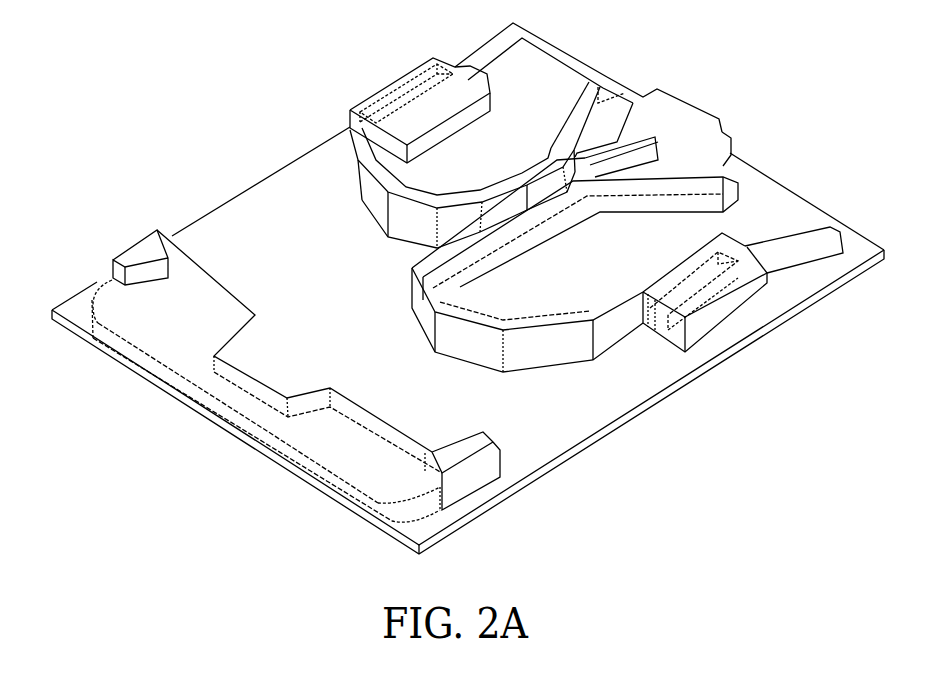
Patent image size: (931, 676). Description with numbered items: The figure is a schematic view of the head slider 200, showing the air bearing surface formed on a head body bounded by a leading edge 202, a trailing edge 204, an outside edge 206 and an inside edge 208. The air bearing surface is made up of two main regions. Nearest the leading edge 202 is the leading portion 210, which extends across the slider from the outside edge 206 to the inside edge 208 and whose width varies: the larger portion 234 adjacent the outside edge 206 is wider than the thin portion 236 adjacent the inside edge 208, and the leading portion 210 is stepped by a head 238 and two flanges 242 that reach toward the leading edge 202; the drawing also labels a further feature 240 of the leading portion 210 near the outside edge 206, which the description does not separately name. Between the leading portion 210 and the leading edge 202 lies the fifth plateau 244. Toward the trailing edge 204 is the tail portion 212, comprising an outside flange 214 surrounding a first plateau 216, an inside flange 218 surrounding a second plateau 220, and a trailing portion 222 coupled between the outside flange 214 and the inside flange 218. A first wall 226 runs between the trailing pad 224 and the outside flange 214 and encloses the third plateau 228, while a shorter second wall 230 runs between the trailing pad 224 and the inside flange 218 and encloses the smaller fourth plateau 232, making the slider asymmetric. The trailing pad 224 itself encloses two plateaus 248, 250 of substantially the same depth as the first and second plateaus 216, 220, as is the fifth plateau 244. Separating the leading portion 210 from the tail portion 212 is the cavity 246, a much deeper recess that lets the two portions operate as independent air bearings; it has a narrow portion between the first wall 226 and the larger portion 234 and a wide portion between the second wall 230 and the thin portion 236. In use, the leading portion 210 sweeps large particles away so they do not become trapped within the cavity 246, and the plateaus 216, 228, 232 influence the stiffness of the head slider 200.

The head slider 200 is at (205, 137).
The leading edge 202 is at (143, 363).
The trailing edge 204 is at (575, 64).
The outside edge 206 is at (610, 430).
The inside edge 208 is at (301, 157).
The leading portion 210 is at (293, 361).
The tail portion 212 is at (717, 115).
The outside flange 214 is at (747, 285).
The first plateau 216 is at (683, 313).
The inside flange 218 is at (407, 83).
The second plateau 220 is at (390, 127).
The trailing portion 222 is at (659, 132).
The trailing pad 224 is at (618, 118).
The first wall 226 is at (457, 340).
The third plateau 228 is at (603, 261).
The second wall 230 is at (412, 193).
The fourth plateau 232 is at (517, 112).
The larger portion of leading portion 234 is at (420, 452).
The thin portion of leading portion 236 is at (223, 300).
The head 238 is at (282, 402).
The end block 240 is at (478, 478).
The flanges 242 is at (140, 250).
The fifth plateau 244 is at (133, 316).
The cavity 246 is at (301, 257).
The plateau 248 is at (665, 162).
The plateau 250 is at (628, 122).